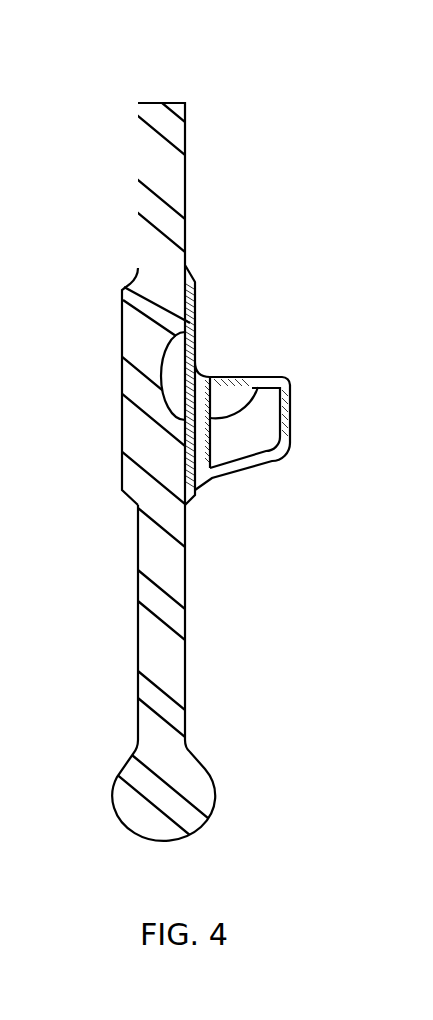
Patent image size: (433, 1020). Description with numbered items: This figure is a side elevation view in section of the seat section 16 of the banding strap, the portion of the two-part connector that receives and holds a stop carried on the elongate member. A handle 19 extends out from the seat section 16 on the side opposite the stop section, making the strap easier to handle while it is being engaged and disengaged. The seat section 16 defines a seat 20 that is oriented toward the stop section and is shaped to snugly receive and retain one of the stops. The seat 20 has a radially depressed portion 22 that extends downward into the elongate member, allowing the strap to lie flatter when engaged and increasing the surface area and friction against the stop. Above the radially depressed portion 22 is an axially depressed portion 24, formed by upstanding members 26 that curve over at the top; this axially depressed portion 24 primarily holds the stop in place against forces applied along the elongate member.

The seat section 16 is at (294, 87).
The handle 19 is at (180, 683).
The seat 20 is at (190, 325).
The radially depressed portion 22 is at (170, 378).
The axially depressed portion 24 is at (231, 395).
The upstanding members 26 is at (235, 443).